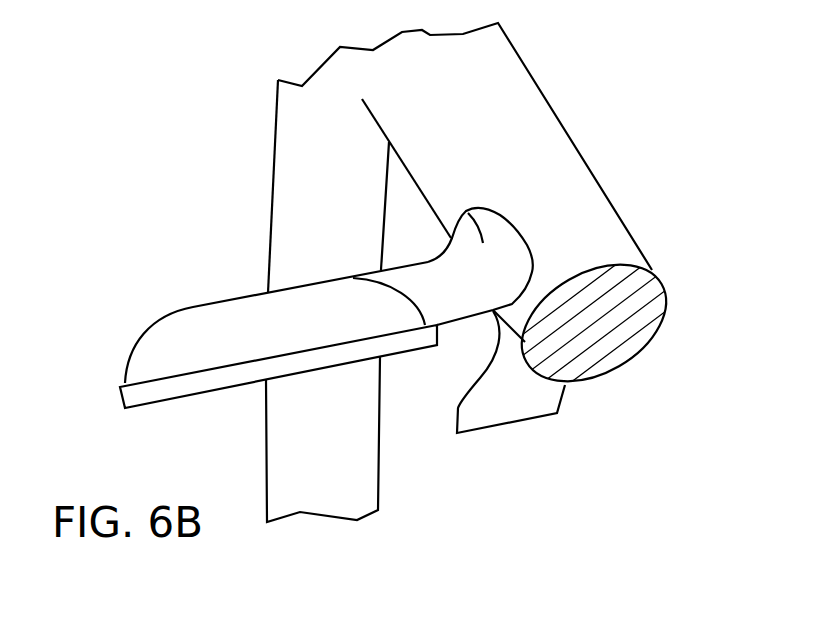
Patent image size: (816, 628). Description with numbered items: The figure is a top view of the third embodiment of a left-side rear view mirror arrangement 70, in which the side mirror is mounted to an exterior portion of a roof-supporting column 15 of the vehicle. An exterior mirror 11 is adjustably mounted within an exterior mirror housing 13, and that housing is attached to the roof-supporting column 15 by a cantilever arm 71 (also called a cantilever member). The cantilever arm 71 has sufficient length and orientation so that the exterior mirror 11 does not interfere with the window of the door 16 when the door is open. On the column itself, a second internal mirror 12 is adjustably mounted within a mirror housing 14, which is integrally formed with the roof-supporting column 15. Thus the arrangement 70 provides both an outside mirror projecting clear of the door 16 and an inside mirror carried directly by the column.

The mirror arrangement 70 is at (252, 197).
The roof-supporting column 15 is at (580, 173).
The door 16 is at (290, 455).
The exterior mirror housing 13 is at (197, 318).
The cantilever arm 71 is at (452, 232).
The exterior mirror 11 is at (195, 396).
The mirror housing 14 is at (565, 383).
The internal mirror 12 is at (512, 422).